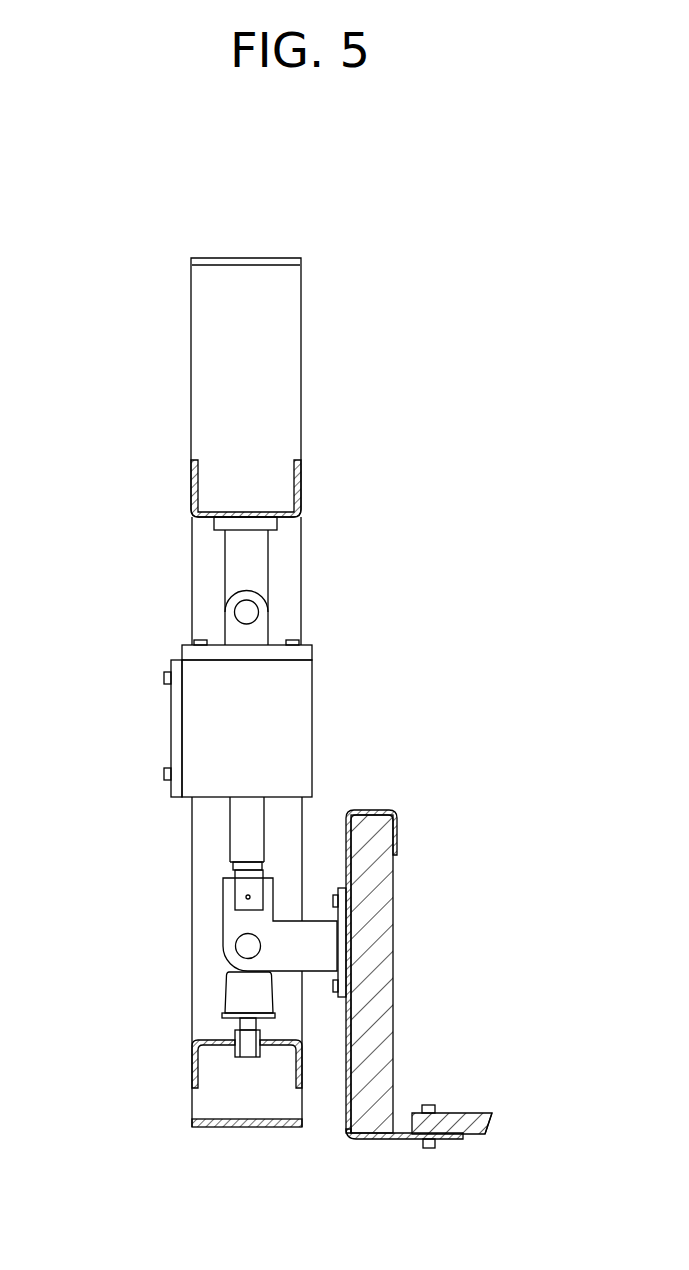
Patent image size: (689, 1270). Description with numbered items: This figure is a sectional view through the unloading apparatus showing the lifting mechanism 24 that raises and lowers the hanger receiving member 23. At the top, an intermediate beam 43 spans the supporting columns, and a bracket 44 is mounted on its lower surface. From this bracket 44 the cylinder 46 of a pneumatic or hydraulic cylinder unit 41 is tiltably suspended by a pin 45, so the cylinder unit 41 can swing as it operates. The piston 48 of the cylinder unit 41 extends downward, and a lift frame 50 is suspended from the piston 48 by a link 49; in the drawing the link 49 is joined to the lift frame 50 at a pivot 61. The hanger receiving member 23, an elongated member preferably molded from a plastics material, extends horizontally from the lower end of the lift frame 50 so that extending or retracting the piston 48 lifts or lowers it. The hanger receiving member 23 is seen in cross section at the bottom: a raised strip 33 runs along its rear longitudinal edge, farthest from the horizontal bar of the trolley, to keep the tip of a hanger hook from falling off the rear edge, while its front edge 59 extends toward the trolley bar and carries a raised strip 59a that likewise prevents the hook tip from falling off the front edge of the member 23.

The hanger receiving member 23 is at (488, 1141).
The lifting mechanism 24 is at (180, 802).
The raised strip 33 is at (442, 1113).
The cylinder unit 41 is at (313, 668).
The intermediate beam 43 is at (297, 521).
The bracket 44 is at (225, 570).
The pin 45 is at (246, 612).
The cylinder 46 is at (300, 720).
The piston 48 is at (230, 838).
The link 49 is at (314, 919).
The lift frame 50 is at (397, 980).
The front edge 59 is at (490, 1113).
The raised strip 59a is at (490, 1115).
The pivot pin 61 is at (240, 948).